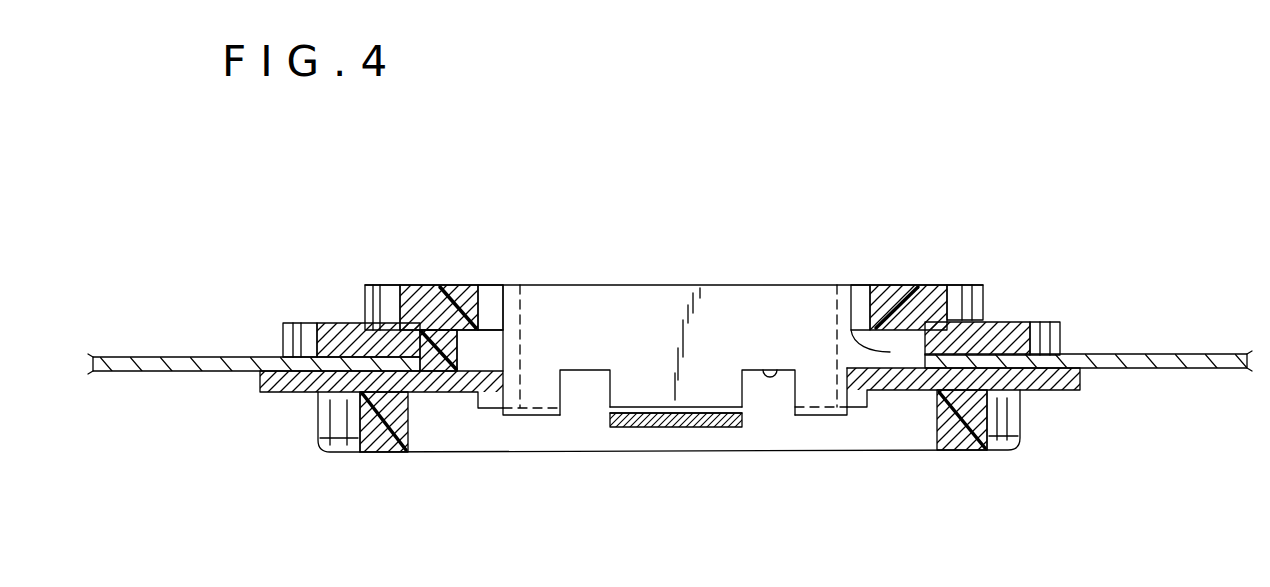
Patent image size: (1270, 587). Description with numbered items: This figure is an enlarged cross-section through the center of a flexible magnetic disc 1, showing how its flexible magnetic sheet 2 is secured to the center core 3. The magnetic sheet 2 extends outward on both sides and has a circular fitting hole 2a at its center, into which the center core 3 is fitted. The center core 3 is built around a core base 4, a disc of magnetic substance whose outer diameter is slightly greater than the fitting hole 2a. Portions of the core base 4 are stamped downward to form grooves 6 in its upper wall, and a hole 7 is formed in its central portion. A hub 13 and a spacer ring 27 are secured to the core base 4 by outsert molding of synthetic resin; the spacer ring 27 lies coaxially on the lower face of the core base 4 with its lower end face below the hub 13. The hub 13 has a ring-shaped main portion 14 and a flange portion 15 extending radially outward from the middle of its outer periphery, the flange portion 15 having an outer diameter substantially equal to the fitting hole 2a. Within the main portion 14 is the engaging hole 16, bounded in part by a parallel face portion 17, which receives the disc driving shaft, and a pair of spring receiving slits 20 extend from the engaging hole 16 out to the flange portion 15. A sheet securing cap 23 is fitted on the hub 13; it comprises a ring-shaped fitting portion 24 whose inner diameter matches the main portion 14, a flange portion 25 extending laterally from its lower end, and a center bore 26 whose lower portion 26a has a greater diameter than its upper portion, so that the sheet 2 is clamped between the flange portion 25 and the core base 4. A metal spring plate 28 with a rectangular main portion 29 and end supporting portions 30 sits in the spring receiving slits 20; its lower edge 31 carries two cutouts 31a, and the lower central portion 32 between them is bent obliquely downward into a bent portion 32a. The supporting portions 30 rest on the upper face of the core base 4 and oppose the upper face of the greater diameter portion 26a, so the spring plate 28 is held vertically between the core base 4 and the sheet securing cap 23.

The flexible magnetic disc 1 is at (1173, 182).
The flexible magnetic sheet 2 is at (1188, 354).
The fitting hole 2a is at (357, 320).
The center core 3 is at (982, 284).
The core base 4 is at (1062, 392).
The grooves 6 is at (310, 447).
The hole 7 is at (513, 385).
The hub 13 is at (438, 285).
The main portion 14 is at (866, 285).
The flange portion 15 is at (460, 285).
The engaging hole 16 is at (578, 398).
The parallel face portion 17 is at (773, 393).
The spring receiving slits 20 is at (513, 285).
The sheet securing cap 23 is at (380, 285).
The fitting portion 24 is at (407, 285).
The flange portion 25 is at (285, 339).
The center bore 26 is at (460, 353).
The greater diameter portion 26a is at (366, 292).
The spacer ring 27 is at (383, 441).
The spring plate 28 is at (683, 285).
The main portion 29 is at (613, 285).
The supporting portions 30 is at (467, 440).
The lower edge 31 is at (533, 417).
The cutouts 31a is at (563, 392).
The lower central portion 32 is at (616, 395).
The bent portion 32a is at (700, 427).